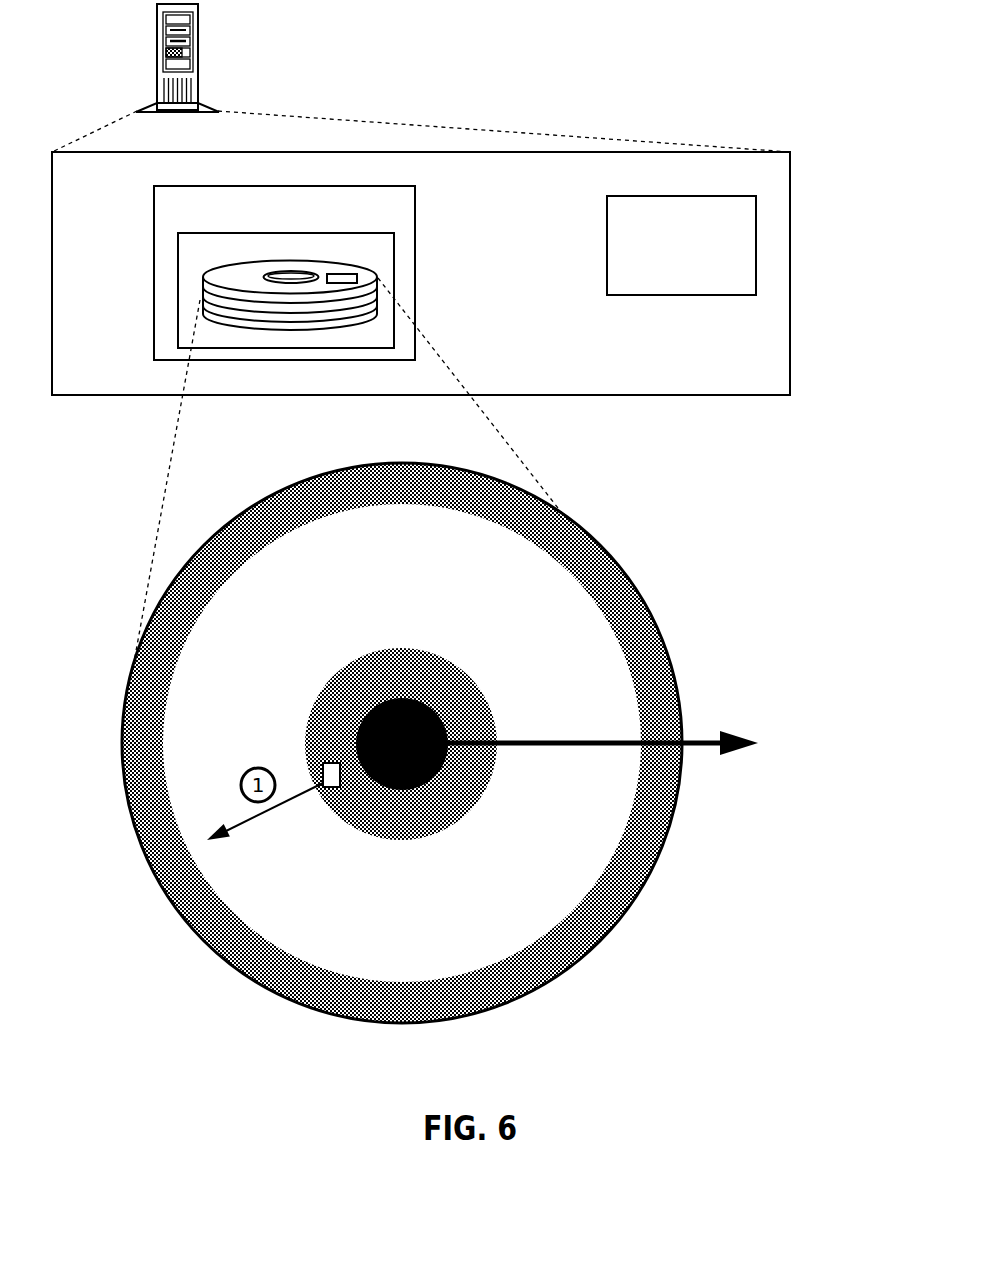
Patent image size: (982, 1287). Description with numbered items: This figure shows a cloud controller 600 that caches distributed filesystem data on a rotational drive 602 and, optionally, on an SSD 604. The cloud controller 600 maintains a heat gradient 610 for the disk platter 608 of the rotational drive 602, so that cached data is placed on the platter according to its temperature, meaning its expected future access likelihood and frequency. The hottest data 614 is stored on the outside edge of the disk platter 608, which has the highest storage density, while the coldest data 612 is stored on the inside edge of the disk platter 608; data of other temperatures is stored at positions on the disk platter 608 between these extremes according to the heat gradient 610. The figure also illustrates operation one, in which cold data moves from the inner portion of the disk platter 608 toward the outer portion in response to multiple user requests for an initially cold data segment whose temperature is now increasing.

The cloud controller 600 is at (239, 58).
The rotational drive 602 is at (443, 257).
The SSD 604 is at (681, 245).
The disk platter 608 is at (660, 620).
The heat gradient 610 is at (602, 748).
The coldest data 612 is at (412, 817).
The hottest data 614 is at (633, 860).